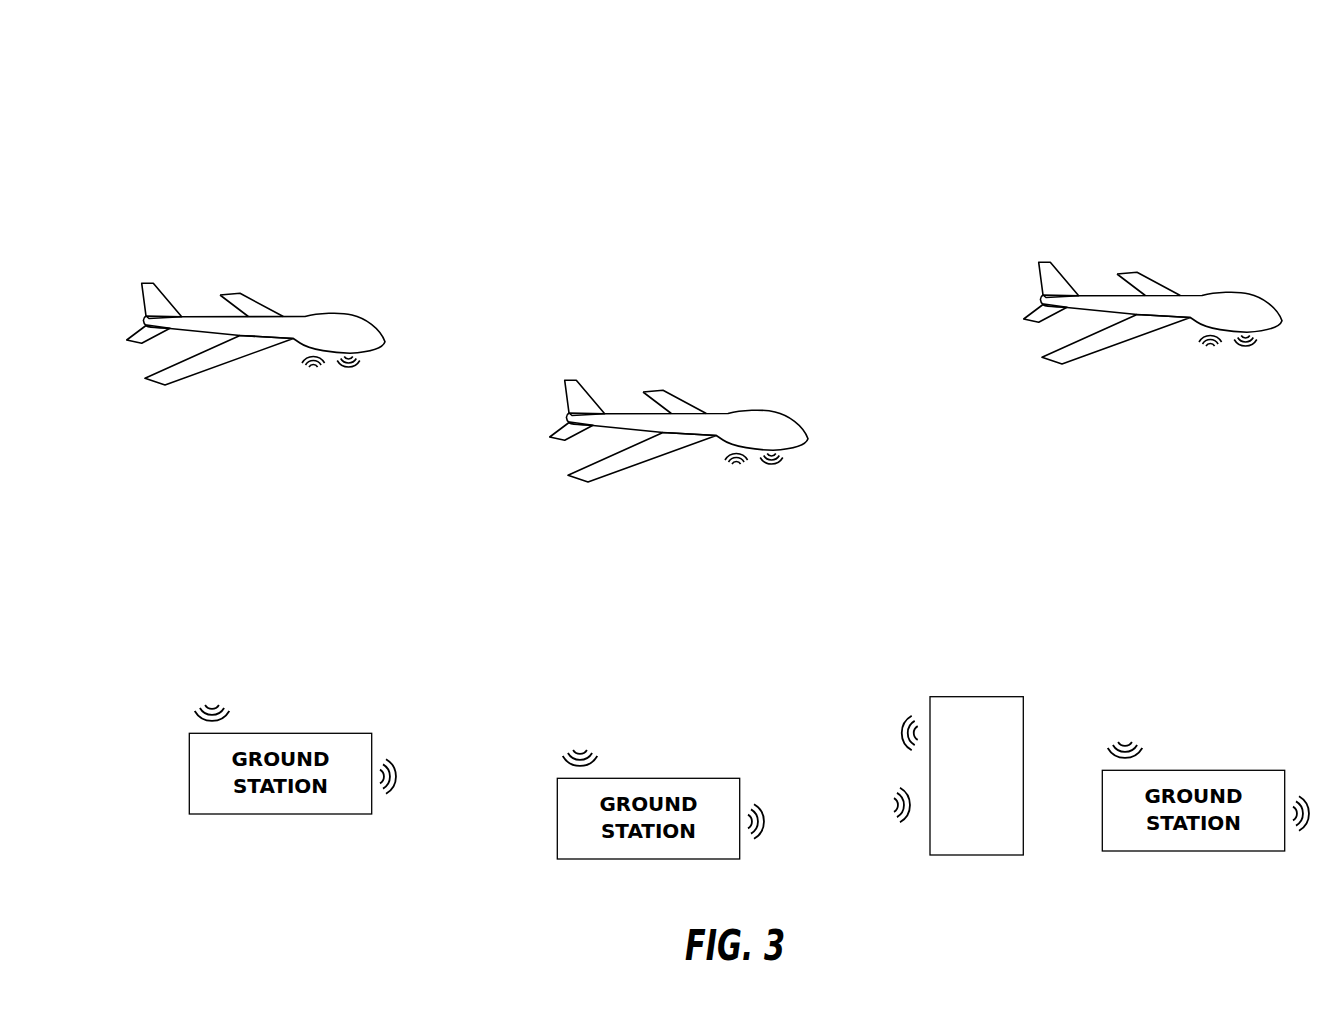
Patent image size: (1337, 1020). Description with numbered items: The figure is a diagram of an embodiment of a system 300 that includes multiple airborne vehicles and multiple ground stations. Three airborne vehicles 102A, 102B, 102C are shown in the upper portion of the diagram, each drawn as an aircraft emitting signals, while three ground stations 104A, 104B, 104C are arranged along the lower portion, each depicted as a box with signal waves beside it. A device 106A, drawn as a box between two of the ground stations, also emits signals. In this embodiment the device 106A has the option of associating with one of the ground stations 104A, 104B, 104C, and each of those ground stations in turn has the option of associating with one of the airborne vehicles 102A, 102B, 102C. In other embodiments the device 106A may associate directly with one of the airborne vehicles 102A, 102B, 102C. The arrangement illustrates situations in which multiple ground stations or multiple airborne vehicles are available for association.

The system 300 is at (220, 89).
The airborne vehicle 102A is at (304, 318).
The airborne vehicle 102B is at (727, 415).
The airborne vehicle 102C is at (1201, 297).
The ground station 104A is at (333, 736).
The ground station 104B is at (701, 781).
The ground station 104C is at (1247, 771).
The device 106A is at (963, 703).